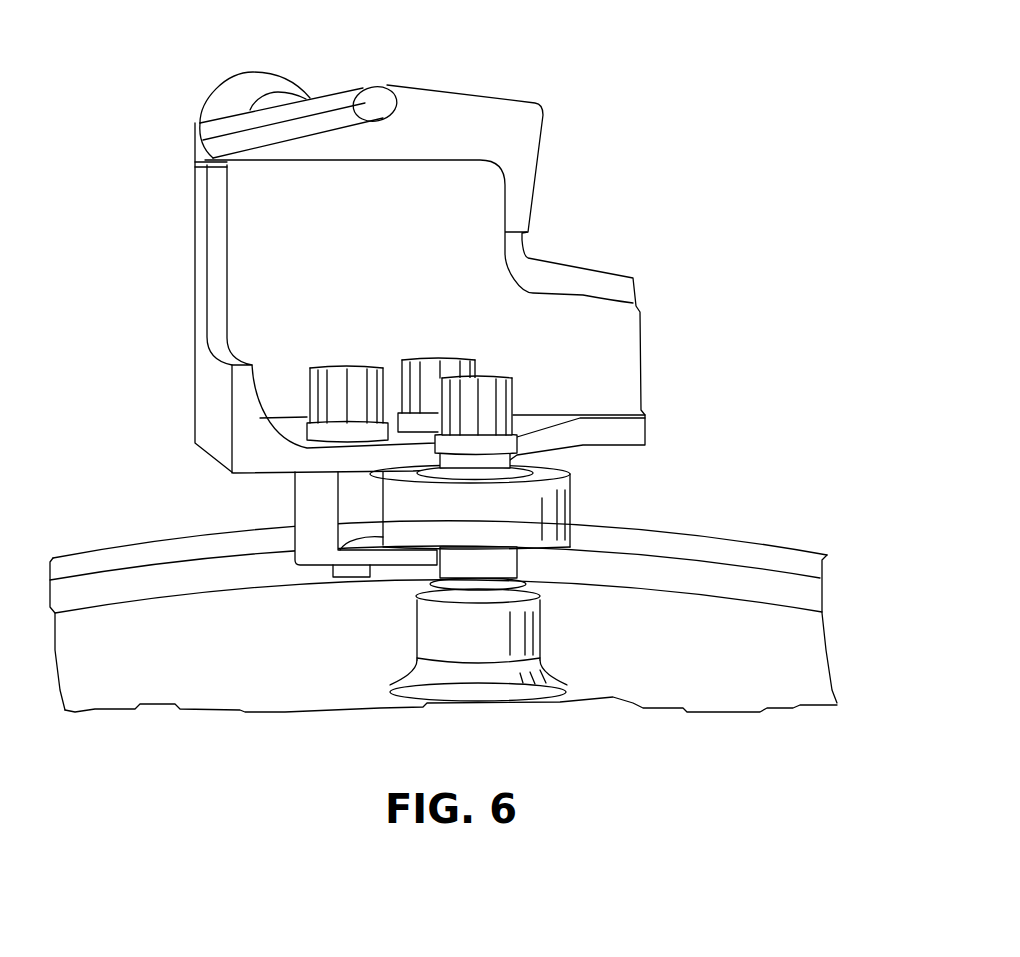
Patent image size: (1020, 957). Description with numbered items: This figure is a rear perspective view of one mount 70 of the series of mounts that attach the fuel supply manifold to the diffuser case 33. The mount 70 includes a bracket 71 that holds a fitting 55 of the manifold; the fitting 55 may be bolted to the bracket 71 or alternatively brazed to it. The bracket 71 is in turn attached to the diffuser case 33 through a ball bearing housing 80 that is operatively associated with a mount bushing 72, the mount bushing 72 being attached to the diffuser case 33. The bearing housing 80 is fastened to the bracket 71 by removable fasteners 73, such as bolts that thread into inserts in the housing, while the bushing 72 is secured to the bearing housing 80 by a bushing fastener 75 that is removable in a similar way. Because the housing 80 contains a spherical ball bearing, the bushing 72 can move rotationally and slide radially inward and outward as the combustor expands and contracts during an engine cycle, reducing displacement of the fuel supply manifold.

The diffuser case 33 is at (203, 683).
The fitting 55 is at (428, 100).
The mount 70 is at (394, 358).
The bracket 71 is at (253, 280).
The mount bushing 72 is at (497, 563).
The removable fasteners 73 is at (352, 363).
The bushing fastener 75 is at (487, 403).
The ball bearing housing 80 is at (400, 517).